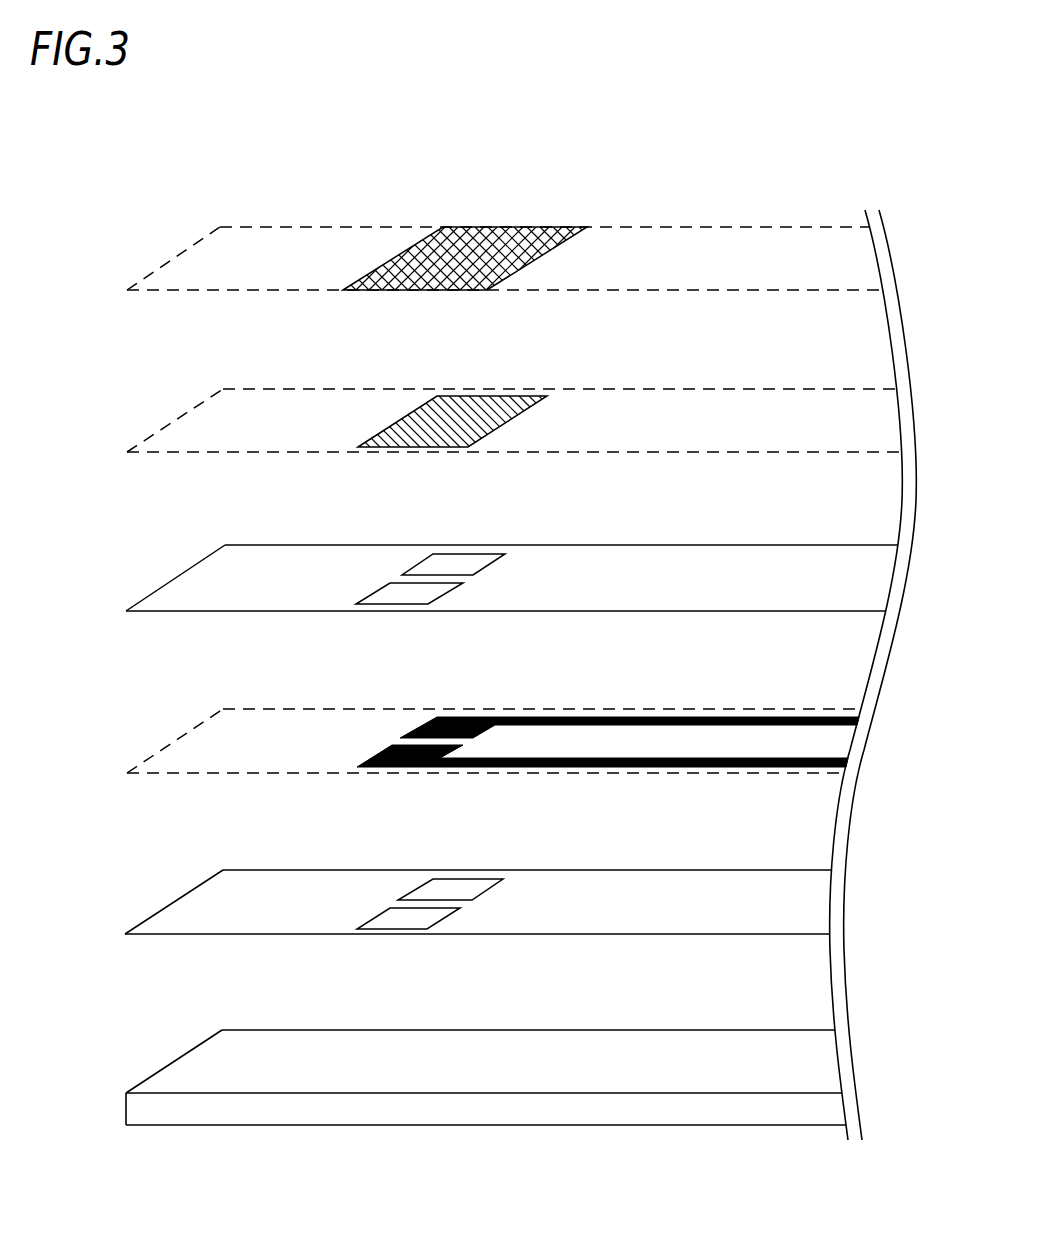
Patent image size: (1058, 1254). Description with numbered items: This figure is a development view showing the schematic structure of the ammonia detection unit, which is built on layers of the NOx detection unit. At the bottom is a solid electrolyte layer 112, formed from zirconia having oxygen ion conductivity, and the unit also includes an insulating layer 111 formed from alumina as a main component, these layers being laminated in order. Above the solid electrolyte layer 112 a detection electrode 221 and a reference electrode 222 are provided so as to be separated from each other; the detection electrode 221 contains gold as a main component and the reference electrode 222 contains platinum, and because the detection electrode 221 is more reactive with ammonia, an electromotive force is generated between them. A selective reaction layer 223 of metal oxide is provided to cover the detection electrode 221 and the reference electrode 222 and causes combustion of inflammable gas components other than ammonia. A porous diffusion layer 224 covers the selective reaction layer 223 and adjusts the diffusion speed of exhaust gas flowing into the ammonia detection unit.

The insulating layer 111 is at (198, 613).
The solid electrolyte layer 112 is at (328, 1058).
The detection electrode 221 is at (410, 770).
The reference electrode 222 is at (468, 715).
The selective reaction layer 223 is at (413, 420).
The diffusion layer 224 is at (492, 232).